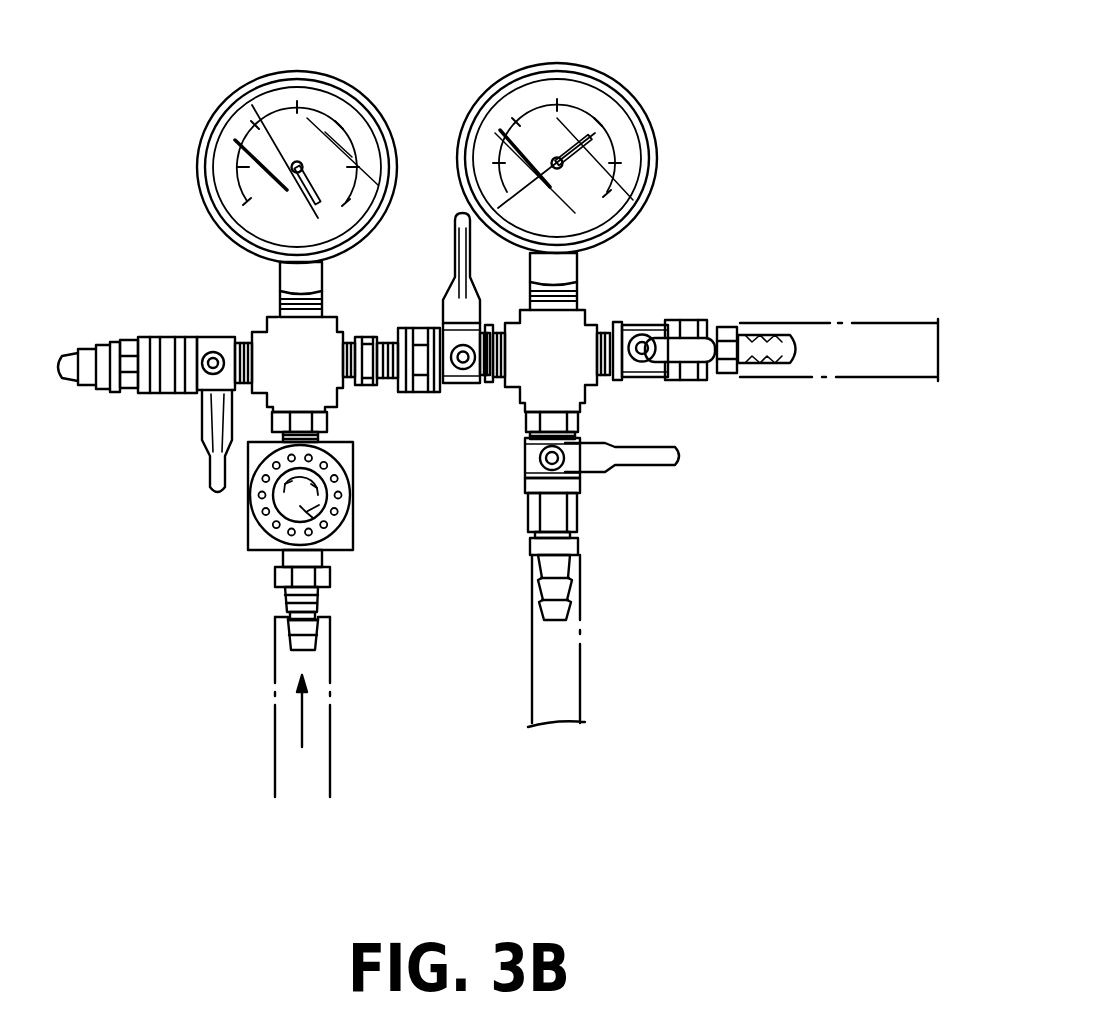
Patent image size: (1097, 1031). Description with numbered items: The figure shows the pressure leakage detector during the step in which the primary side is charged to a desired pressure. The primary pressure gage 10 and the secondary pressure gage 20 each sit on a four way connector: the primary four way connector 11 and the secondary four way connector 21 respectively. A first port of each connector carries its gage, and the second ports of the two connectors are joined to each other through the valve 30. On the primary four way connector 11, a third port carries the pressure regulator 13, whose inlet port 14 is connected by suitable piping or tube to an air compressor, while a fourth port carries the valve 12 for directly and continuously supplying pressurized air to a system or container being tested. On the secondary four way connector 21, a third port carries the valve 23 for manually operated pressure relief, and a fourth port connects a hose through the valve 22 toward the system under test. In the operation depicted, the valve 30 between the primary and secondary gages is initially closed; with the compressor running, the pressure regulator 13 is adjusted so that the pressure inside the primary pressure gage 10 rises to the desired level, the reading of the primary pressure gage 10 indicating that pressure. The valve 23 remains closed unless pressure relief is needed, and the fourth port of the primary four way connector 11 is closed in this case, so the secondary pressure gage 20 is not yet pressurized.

The primary pressure gage 10 is at (295, 87).
The secondary pressure gage 20 is at (550, 65).
The primary four way connector 11 is at (318, 378).
The secondary four way connector 21 is at (573, 330).
The valve 12 is at (207, 413).
The valve 30 is at (460, 252).
The valve 22 is at (678, 340).
The pressure regulator 13 is at (348, 516).
The inlet port 14 is at (330, 587).
The valve 23 is at (585, 463).